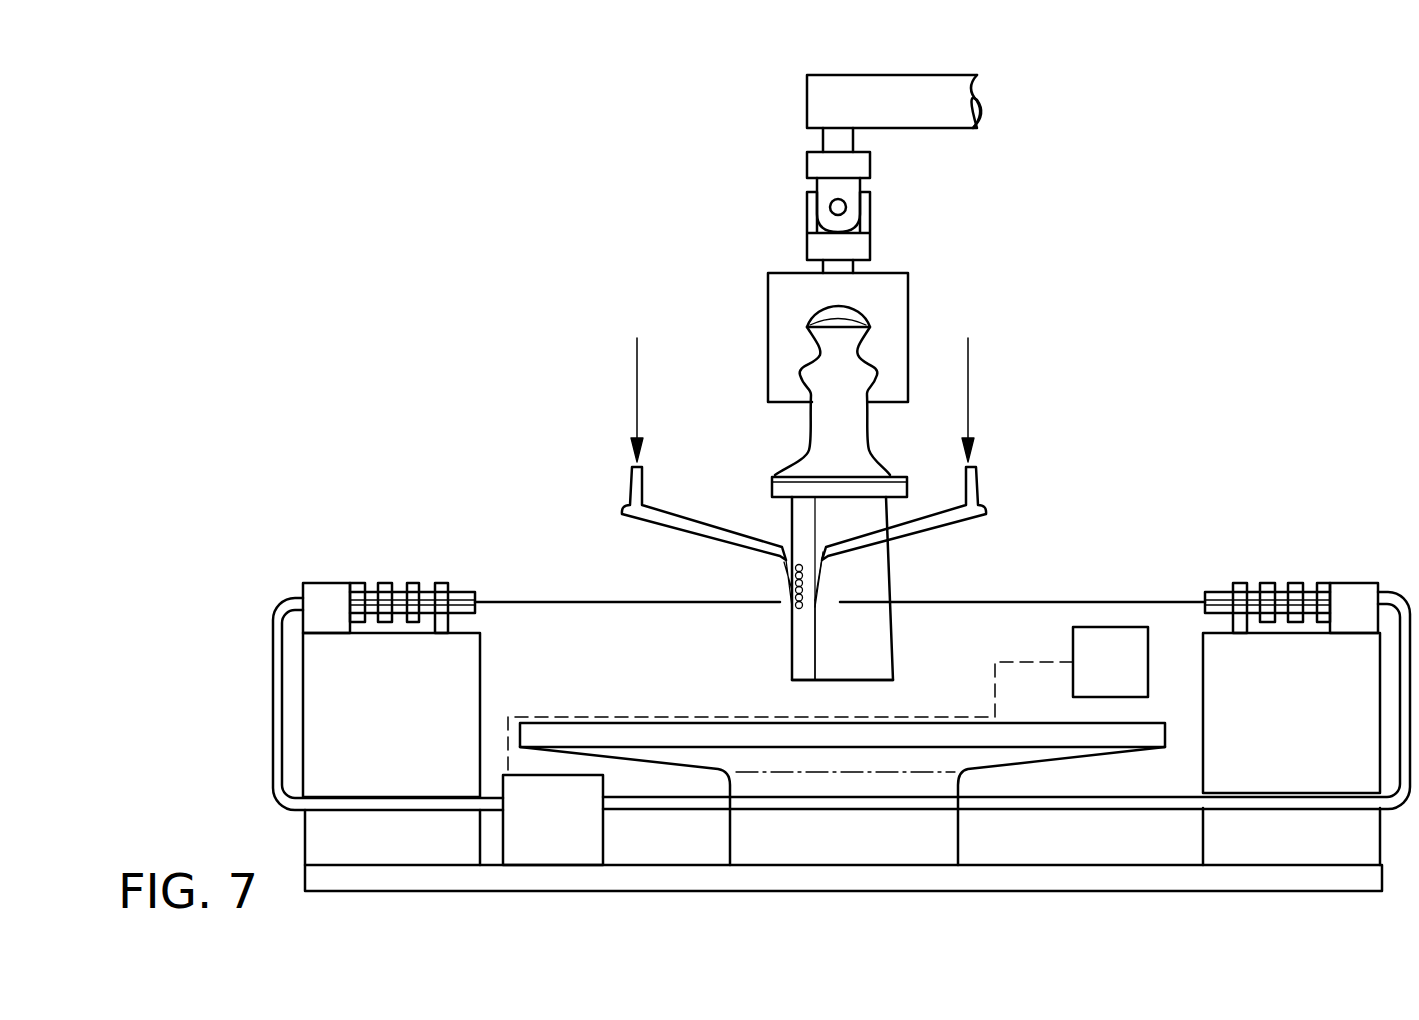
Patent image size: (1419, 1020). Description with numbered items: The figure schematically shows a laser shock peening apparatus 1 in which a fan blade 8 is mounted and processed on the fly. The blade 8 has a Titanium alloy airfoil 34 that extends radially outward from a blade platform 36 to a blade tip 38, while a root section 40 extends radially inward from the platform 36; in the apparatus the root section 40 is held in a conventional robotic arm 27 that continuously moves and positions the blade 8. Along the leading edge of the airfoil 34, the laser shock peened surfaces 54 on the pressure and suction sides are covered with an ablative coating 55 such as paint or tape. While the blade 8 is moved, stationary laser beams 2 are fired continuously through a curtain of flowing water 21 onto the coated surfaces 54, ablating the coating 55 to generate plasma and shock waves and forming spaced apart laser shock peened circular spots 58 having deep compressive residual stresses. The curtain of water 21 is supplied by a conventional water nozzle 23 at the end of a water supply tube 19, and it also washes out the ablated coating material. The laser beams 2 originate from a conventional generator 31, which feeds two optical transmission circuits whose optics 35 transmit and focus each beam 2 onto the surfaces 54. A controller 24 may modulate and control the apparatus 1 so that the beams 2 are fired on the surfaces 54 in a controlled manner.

The laser shock peening apparatus 1 is at (1143, 355).
The laser beam 2 is at (522, 600).
The fan blade 8 is at (893, 567).
The water supply tube 19 is at (678, 529).
The curtain of flowing water 21 is at (786, 568).
The water nozzle 23 is at (823, 552).
The controller 24 is at (1126, 676).
The robotic arm 27 is at (885, 172).
The generator 31 is at (568, 832).
The airfoil 34 is at (890, 598).
The optics 35 is at (385, 583).
The blade platform 36 is at (910, 487).
The blade tip 38 is at (882, 688).
The root section 40 is at (866, 421).
The laser shock peened surface 54 is at (800, 646).
The ablative coating 55 is at (804, 626).
The laser shock peened circular spots 58 is at (793, 614).